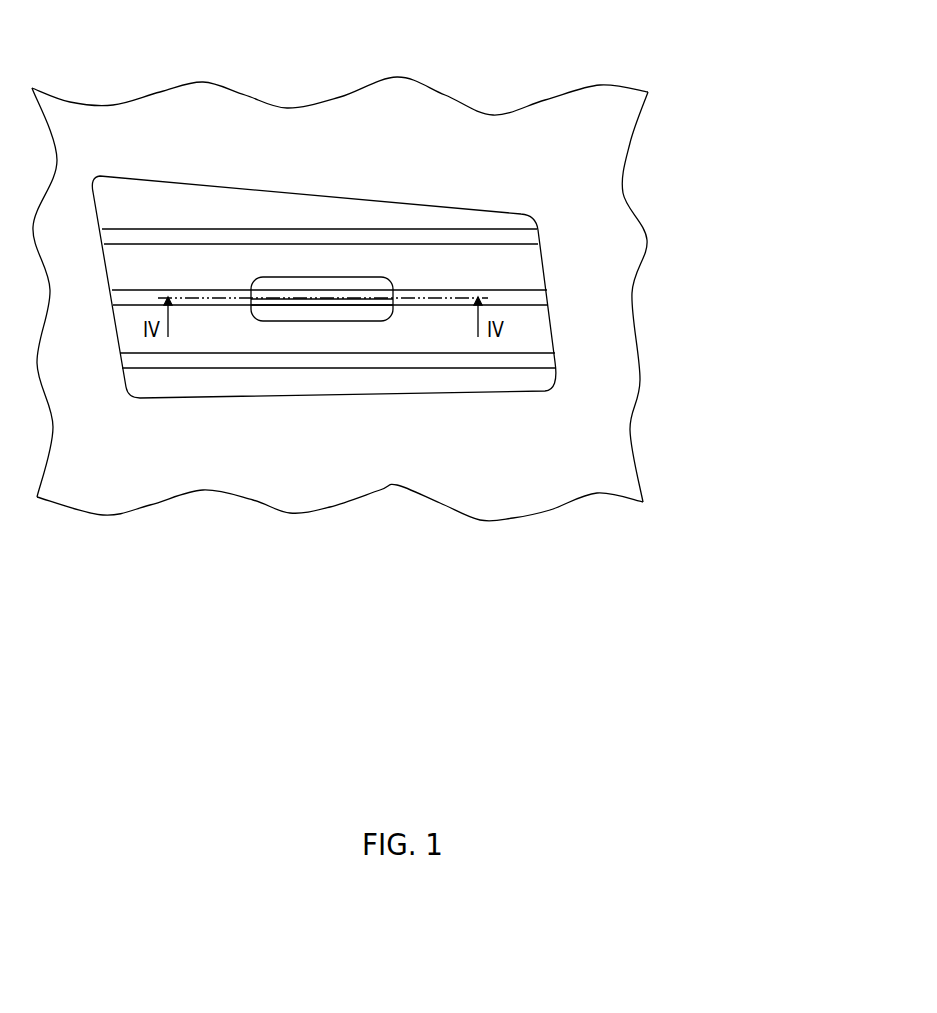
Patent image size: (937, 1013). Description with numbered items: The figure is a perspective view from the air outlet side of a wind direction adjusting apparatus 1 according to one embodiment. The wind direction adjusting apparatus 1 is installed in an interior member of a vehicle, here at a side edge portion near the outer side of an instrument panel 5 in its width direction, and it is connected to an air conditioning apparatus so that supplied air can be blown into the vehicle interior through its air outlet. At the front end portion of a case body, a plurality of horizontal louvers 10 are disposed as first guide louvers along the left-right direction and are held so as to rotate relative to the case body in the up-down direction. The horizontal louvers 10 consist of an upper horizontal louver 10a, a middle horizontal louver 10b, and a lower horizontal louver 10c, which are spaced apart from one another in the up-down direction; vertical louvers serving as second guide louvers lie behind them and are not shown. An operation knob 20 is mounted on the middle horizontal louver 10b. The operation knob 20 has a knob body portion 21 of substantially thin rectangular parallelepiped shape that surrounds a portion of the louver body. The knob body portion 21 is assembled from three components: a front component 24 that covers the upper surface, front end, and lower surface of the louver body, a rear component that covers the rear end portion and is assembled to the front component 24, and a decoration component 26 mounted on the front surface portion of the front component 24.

The wind direction adjusting apparatus 1 is at (128, 203).
The instrument panel 5 is at (598, 152).
The horizontal louvers 10 is at (472, 282).
The upper horizontal louver 10a is at (518, 237).
The middle horizontal louver 10b is at (517, 302).
The lower horizontal louver 10c is at (518, 363).
The operation knob 20 is at (314, 276).
The knob body portion 21 is at (294, 471).
The front component 24 is at (262, 322).
The decoration component 26 is at (345, 306).